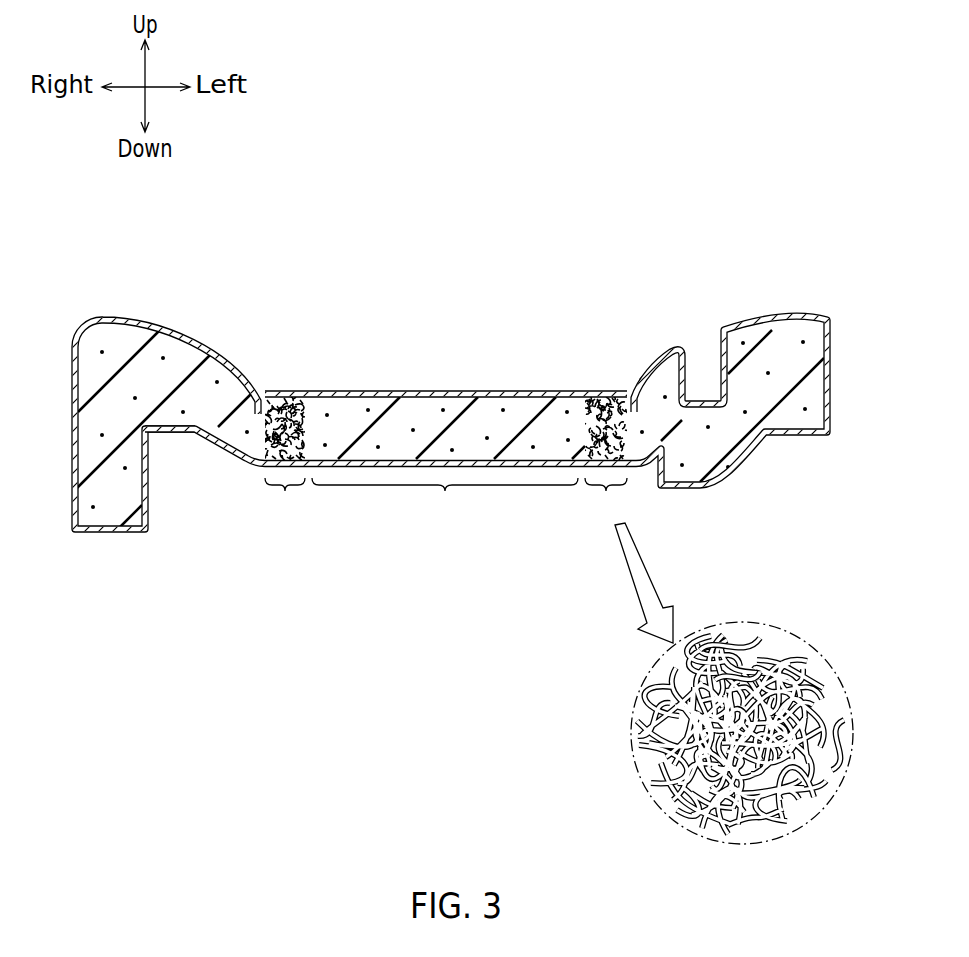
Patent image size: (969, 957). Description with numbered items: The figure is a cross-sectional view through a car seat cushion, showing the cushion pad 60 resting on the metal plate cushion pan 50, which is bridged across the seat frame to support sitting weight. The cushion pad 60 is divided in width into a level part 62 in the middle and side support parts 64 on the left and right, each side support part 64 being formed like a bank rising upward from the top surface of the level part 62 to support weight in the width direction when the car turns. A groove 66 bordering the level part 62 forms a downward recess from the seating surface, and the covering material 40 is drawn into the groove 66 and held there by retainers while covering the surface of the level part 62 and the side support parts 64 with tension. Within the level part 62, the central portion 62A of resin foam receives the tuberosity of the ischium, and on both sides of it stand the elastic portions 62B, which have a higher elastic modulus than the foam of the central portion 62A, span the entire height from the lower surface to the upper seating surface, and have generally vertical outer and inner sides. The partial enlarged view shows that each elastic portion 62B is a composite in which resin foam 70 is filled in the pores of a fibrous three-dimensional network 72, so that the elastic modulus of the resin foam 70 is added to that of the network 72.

The covering material 40 is at (217, 343).
The cushion pan 50 is at (220, 443).
The cushion pad 60 is at (465, 552).
The level part 62 is at (428, 420).
The central portion 62A is at (445, 499).
The elastic portion 62B is at (559, 661).
The side support part 64 is at (768, 360).
The groove 66 is at (629, 392).
The resin foam 70 is at (782, 663).
The three-dimensional network 72 is at (727, 626).